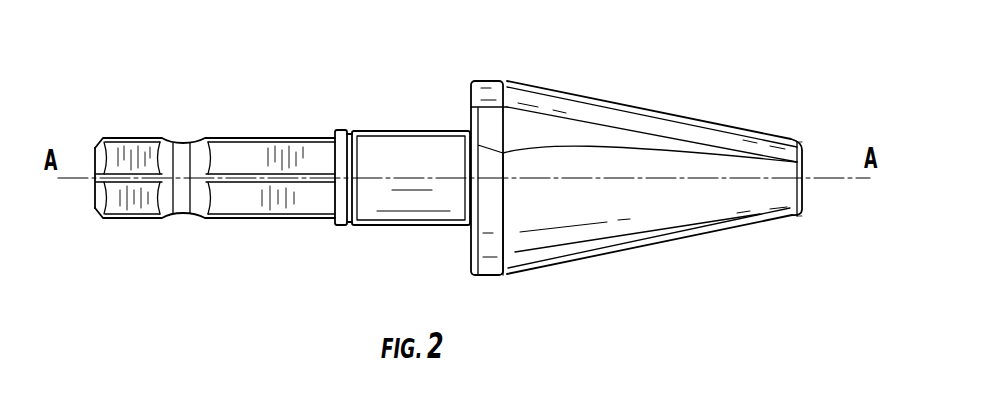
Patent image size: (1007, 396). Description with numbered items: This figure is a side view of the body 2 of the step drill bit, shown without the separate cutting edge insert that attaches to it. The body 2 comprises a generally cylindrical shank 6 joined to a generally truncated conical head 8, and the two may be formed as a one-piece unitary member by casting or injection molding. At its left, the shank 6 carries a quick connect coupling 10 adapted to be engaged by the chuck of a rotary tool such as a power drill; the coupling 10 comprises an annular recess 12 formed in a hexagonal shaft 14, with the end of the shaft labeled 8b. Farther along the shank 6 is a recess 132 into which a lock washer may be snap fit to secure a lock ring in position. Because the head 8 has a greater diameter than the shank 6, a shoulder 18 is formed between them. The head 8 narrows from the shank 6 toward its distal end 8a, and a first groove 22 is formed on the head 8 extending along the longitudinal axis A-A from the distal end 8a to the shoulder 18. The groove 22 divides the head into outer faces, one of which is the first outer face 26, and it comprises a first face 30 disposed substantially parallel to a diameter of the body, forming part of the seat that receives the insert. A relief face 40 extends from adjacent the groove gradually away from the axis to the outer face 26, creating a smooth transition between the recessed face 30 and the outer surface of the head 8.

The body 2 is at (606, 66).
The shank 6 is at (318, 232).
The head 8 is at (659, 252).
The distal end of the head 8a is at (803, 167).
The drive end of shank 8b is at (93, 200).
The quick connect coupling 10 is at (185, 125).
The annular recess 12 is at (182, 216).
The hexagonal shaft 14 is at (241, 157).
The shoulder 18 is at (470, 252).
The first groove 22 is at (566, 111).
The first outer face 26 is at (557, 198).
The first face 30 is at (630, 120).
The relief face 40 is at (512, 130).
The recess 132 is at (351, 130).